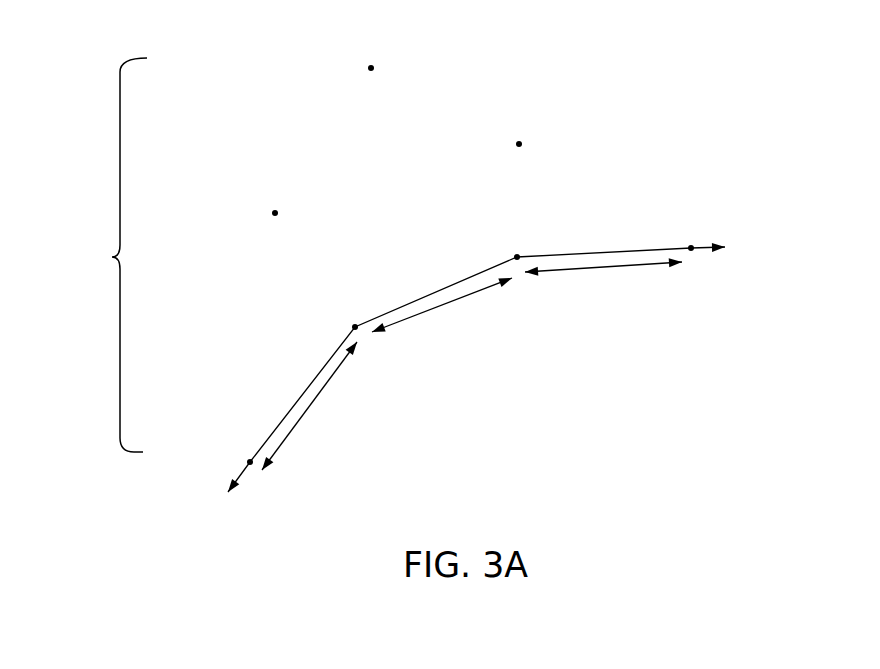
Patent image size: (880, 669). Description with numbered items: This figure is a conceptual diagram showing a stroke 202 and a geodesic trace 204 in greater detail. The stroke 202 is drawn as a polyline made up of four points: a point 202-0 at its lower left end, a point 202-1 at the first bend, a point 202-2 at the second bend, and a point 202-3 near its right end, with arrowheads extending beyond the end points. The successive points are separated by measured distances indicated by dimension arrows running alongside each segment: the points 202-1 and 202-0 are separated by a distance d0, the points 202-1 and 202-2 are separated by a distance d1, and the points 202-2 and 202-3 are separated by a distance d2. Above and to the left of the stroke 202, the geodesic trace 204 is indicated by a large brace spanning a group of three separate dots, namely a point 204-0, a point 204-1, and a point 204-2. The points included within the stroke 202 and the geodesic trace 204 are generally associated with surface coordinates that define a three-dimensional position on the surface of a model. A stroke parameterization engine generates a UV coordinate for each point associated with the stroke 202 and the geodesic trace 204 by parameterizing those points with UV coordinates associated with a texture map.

The stroke 202 is at (610, 353).
The point 202-0 is at (250, 465).
The point 202-1 is at (357, 329).
The point 202-2 is at (518, 260).
The point 202-3 is at (692, 251).
The geodesic trace 204 is at (112, 257).
The point 204-0 is at (274, 211).
The point 204-1 is at (519, 142).
The point 204-2 is at (371, 66).
The distance d0 is at (303, 410).
The distance d1 is at (427, 312).
The distance d2 is at (585, 270).